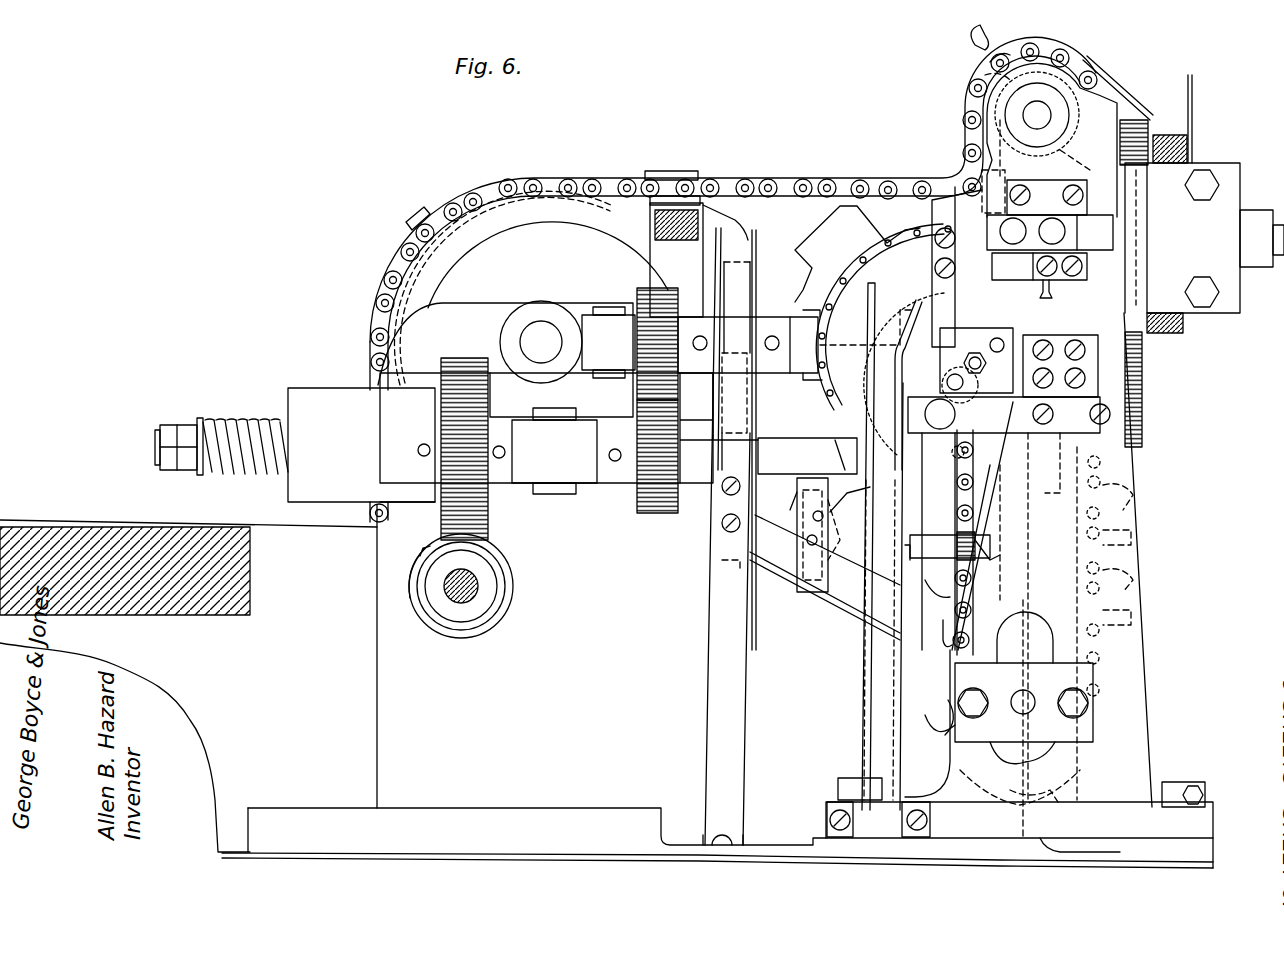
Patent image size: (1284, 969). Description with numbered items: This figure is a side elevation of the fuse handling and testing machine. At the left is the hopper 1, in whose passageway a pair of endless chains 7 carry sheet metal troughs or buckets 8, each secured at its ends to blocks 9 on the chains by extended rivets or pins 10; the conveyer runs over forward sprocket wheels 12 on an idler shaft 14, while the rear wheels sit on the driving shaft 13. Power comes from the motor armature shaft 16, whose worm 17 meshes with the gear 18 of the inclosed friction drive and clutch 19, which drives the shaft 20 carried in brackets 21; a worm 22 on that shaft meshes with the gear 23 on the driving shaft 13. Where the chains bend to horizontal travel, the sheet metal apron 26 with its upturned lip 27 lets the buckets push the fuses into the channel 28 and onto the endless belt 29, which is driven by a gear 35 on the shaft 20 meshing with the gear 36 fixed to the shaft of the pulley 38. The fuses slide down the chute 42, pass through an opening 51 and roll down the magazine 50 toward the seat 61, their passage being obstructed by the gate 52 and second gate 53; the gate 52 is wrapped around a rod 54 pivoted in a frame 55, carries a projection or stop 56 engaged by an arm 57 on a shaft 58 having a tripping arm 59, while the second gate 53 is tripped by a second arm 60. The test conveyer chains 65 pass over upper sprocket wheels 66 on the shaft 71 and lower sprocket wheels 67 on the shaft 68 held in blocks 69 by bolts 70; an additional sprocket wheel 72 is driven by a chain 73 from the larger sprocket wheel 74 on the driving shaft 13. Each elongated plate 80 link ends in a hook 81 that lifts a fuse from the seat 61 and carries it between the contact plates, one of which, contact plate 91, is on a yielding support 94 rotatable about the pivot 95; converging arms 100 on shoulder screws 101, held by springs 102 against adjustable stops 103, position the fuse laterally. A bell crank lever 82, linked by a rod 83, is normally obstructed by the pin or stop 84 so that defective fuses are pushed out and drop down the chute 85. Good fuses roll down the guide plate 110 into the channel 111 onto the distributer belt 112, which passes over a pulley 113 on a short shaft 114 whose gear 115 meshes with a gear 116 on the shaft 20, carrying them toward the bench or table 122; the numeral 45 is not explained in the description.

The hopper 1 is at (210, 760).
The endless chains 7 is at (546, 181).
The troughs or buckets 8 is at (417, 214).
The blocks 9 is at (690, 180).
The extended rivets or pins 10 is at (689, 178).
The forward sprocket wheels 12 is at (548, 265).
The driving shaft 13 is at (905, 322).
The idler shaft 14 is at (538, 353).
The armature shaft 16 is at (480, 584).
The worm 17 is at (495, 612).
The gear 18 is at (485, 520).
The inclosed friction drive and clutch 19 is at (316, 392).
The shaft 20 is at (699, 462).
The brackets 21 is at (588, 485).
The worm 22 is at (975, 512).
The gear 23 is at (925, 300).
The sheet metal apron 26 is at (406, 340).
The lip 27 is at (722, 208).
The channel 28 is at (745, 240).
The endless belt 29 is at (737, 258).
The gear 35 is at (642, 512).
The gear 36 is at (642, 378).
The pulley 38 is at (752, 285).
The chute 42 is at (726, 442).
The base 45 is at (782, 848).
The magazine 50 is at (772, 582).
The opening 51 is at (757, 540).
The gate 52 is at (825, 596).
The second gate 53 is at (888, 630).
The rod 54 is at (805, 535).
The frame 55 is at (790, 475).
The projection or stop 56 is at (846, 530).
The arm 57 is at (830, 507).
The shaft 58 is at (815, 465).
The tripping arm 59 is at (850, 460).
The second arm 60 is at (930, 615).
The seat 61 is at (940, 640).
The chains 65 is at (1135, 490).
The upper sprocket wheels 66 is at (1068, 72).
The lower sprocket wheels 67 is at (1010, 780).
The shaft 68 is at (1040, 685).
The blocks 69 is at (990, 745).
The bolts 70 is at (955, 730).
The shaft 71 is at (1040, 133).
The additional sprocket wheel 72 is at (975, 138).
The chain 73 is at (818, 383).
The larger sprocket wheel 74 is at (825, 393).
The elongated plate 80 is at (1000, 50).
The hook 81 is at (978, 40).
The bell crank lever 82 is at (985, 73).
The rod 83 is at (1065, 825).
The pin or stop 84 is at (1015, 280).
The chute 85 is at (862, 732).
The contact plate 91 is at (935, 302).
The yielding support 94 is at (1050, 215).
The pivot 95 is at (1118, 212).
The converging arms 100 is at (970, 455).
The shoulder screws 101 is at (947, 558).
The springs 102 is at (985, 525).
The adjustable stops 103 is at (946, 444).
The guide plate 110 is at (1115, 78).
The channel 111 is at (1185, 125).
The distributer belt 112 is at (1165, 135).
The pulley 113 is at (1185, 320).
The short shaft 114 is at (1275, 222).
The gear 115 is at (1140, 118).
The gear 116 is at (1130, 400).
The bench or table 122 is at (160, 528).